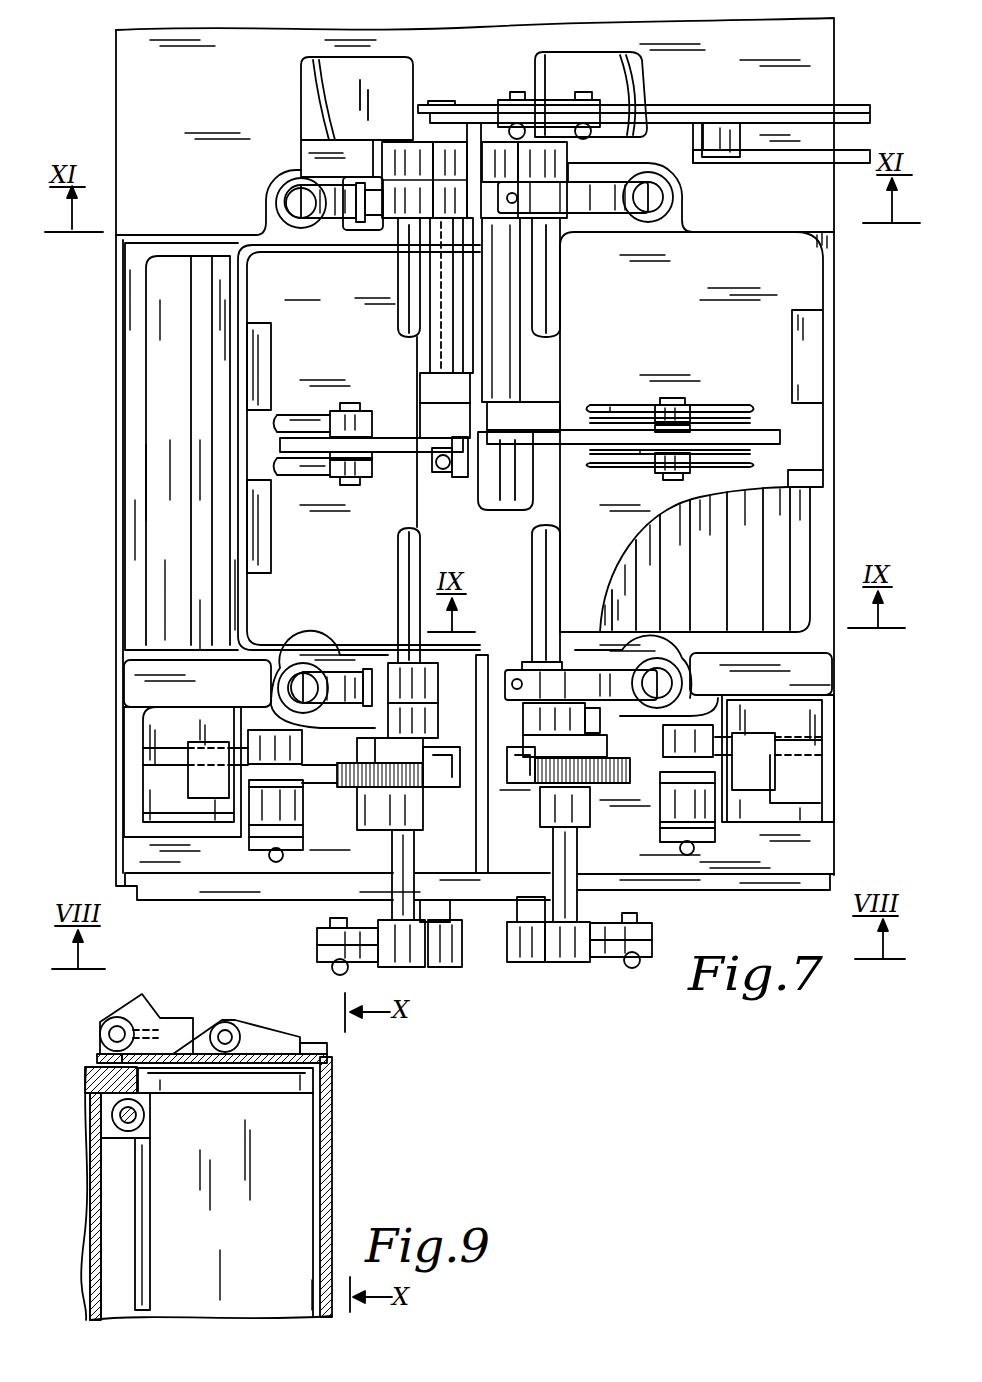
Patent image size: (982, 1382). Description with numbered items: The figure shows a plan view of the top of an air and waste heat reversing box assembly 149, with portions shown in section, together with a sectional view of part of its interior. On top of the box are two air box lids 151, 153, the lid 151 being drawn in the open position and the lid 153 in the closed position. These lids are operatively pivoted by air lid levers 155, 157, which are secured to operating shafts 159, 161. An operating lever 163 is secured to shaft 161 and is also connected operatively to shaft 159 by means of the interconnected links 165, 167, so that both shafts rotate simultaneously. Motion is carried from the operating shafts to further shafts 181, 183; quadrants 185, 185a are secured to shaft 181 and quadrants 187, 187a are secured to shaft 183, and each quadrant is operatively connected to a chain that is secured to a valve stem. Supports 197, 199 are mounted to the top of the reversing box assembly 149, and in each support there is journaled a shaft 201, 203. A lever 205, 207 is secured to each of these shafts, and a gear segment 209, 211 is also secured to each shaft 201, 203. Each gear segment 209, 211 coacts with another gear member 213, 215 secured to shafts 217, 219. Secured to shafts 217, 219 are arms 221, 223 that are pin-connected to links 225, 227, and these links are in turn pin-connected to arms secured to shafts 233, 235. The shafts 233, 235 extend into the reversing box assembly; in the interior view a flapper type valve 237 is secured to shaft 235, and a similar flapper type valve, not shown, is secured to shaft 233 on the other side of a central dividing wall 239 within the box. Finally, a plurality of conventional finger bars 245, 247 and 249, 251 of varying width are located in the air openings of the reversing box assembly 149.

In FIG. 7, the air and waste heat reversing box assembly 149 is at (116, 576).
In FIG. 9, the air and waste heat reversing box assembly 149 is at (338, 1149).
In FIG. 7, the air box lid 151 is at (347, 315).
In FIG. 7, the air box lid 153 is at (690, 313).
In FIG. 9, the air box lid 153 is at (247, 1040).
In FIG. 7, the air lid lever 155 is at (388, 442).
In FIG. 7, the air lid lever 157 is at (578, 438).
In FIG. 9, the air lid lever 157 is at (177, 1022).
In FIG. 7, the operating shaft 159 is at (441, 258).
In FIG. 7, the operating shaft 161 is at (508, 378).
In FIG. 9, the operating shaft 161 is at (100, 1036).
In FIG. 7, the operating lever 163 is at (725, 105).
In FIG. 7, the link 165 is at (488, 106).
In FIG. 7, the link 167 is at (555, 100).
In FIG. 7, the shaft 181 is at (401, 330).
In FIG. 7, the shaft 183 is at (552, 312).
In FIG. 7, the quadrant 185 is at (298, 180).
In FIG. 7, the quadrant 185a is at (340, 672).
In FIG. 7, the quadrant 187 is at (605, 210).
In FIG. 7, the quadrant 187a is at (605, 665).
In FIG. 7, the support 197 is at (153, 757).
In FIG. 7, the support 199 is at (803, 743).
In FIG. 7, the shaft 201 is at (273, 855).
In FIG. 7, the shaft 203 is at (690, 848).
In FIG. 7, the lever 205 is at (260, 842).
In FIG. 7, the lever 207 is at (717, 836).
In FIG. 7, the gear segment 209 is at (320, 780).
In FIG. 7, the gear segment 211 is at (647, 765).
In FIG. 7, the gear member 213 is at (397, 768).
In FIG. 7, the gear member 215 is at (550, 793).
In FIG. 7, the shaft 217 is at (402, 857).
In FIG. 7, the shaft 219 is at (577, 842).
In FIG. 7, the arm 221 is at (333, 960).
In FIG. 7, the arm 223 is at (615, 960).
In FIG. 7, the link 225 is at (320, 945).
In FIG. 7, the link 227 is at (650, 928).
In FIG. 7, the shaft 233 is at (447, 913).
In FIG. 7, the shaft 235 is at (530, 917).
In FIG. 9, the shaft 235 is at (143, 1119).
In FIG. 9, the flapper type valve 237 is at (152, 1237).
In FIG. 9, the central dividing wall 239 is at (96, 1233).
In FIG. 7, the finger bar 245 is at (156, 449).
In FIG. 7, the finger bar 247 is at (200, 509).
In FIG. 7, the finger bar 249 is at (758, 510).
In FIG. 7, the finger bar 251 is at (712, 557).